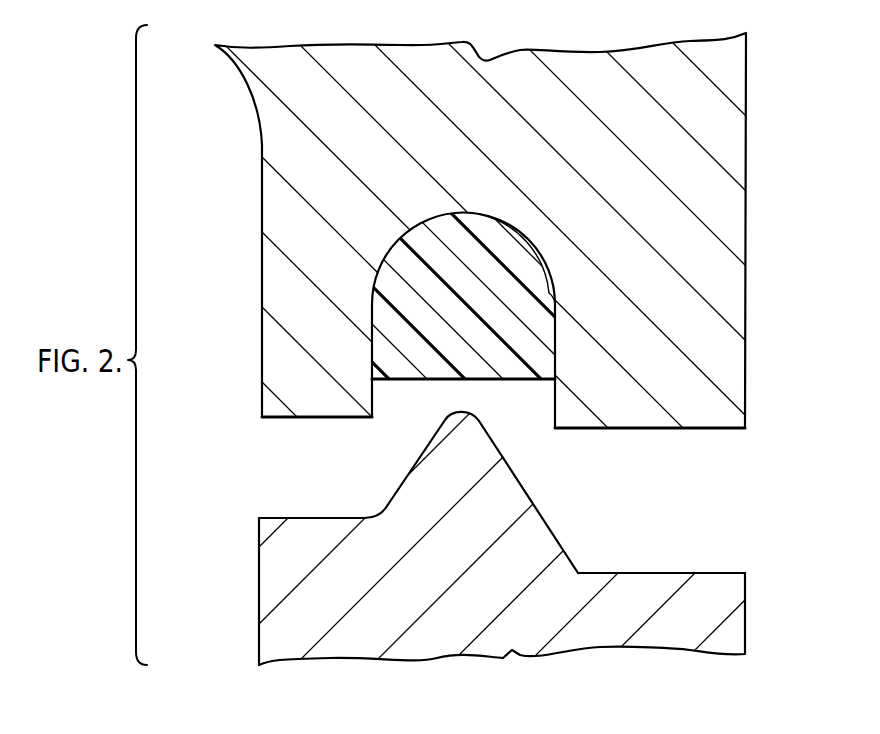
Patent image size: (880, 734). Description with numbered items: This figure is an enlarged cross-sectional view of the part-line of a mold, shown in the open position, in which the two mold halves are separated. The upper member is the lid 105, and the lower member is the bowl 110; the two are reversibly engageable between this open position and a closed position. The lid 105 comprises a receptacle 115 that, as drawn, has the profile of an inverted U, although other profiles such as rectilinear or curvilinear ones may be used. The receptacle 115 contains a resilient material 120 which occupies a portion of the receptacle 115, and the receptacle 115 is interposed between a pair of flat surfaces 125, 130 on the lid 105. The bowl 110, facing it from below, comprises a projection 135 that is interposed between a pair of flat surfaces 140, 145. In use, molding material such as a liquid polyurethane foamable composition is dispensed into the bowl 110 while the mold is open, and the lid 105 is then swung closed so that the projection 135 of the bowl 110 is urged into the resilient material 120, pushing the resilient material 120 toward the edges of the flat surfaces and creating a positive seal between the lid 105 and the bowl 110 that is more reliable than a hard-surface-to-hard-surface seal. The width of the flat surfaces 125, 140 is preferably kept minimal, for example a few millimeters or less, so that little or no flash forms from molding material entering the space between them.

The lid 105 is at (737, 230).
The bowl 110 is at (714, 593).
The receptacle 115 is at (555, 403).
The resilient material 120 is at (547, 293).
The flat surface 125 is at (298, 417).
The flat surface 130 is at (678, 430).
The projection 135 is at (518, 488).
The flat surface 140 is at (295, 518).
The flat surface 145 is at (662, 573).